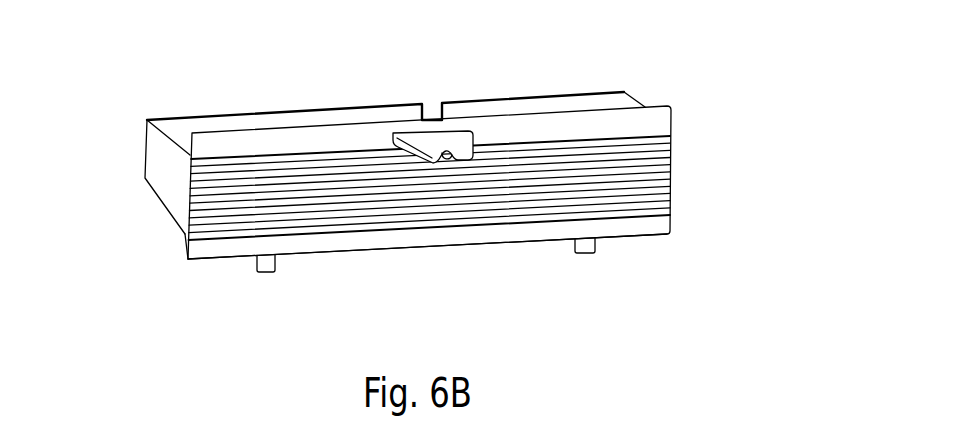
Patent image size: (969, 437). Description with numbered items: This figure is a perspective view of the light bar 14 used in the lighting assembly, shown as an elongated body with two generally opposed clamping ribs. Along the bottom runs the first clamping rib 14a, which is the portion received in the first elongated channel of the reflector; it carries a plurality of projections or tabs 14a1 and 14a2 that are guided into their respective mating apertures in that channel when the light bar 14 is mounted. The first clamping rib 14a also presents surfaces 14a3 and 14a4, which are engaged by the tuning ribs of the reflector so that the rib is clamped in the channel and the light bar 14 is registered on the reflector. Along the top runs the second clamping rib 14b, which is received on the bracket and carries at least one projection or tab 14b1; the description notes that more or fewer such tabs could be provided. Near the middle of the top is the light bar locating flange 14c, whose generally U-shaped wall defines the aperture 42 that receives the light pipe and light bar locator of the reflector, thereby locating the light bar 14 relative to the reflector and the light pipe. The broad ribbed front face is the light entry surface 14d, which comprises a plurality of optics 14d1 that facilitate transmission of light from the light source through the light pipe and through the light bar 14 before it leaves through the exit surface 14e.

The light bar 14 is at (621, 92).
The first clamping rib 14a is at (413, 249).
The projection or tab 14a1 is at (257, 266).
The projection or tab 14a2 is at (598, 247).
The surface of the first clamping rib 14a3 is at (203, 247).
The surface of the first clamping rib 14a4 is at (183, 247).
The second clamping rib 14b is at (357, 124).
The projection or tab 14b1 is at (440, 104).
The light bar locating flange 14c is at (636, 123).
The light entry surface 14d is at (656, 178).
The optics 14d1 is at (606, 198).
The exit surface 14e is at (242, 195).
The aperture 42 is at (455, 166).